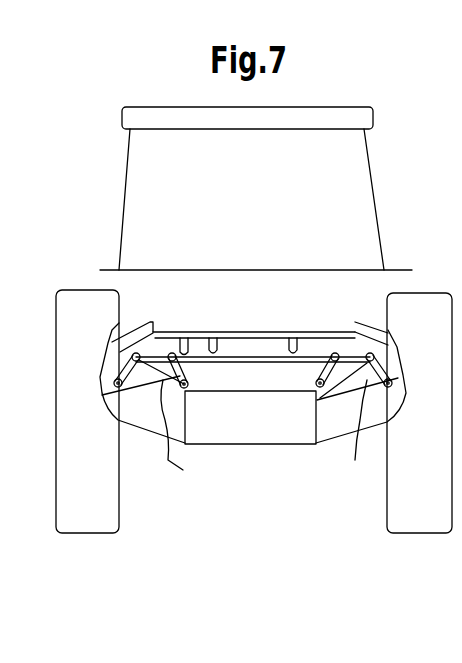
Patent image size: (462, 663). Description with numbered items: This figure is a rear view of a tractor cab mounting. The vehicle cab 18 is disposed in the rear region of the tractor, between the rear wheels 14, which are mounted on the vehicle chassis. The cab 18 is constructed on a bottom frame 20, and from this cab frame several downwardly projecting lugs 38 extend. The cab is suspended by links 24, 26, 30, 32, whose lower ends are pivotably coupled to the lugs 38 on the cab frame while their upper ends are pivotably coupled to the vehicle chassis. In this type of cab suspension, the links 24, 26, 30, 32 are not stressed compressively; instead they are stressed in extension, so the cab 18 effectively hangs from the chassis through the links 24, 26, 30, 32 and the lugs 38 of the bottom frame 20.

The rear wheels 14 is at (90, 517).
The vehicle cab 18 is at (365, 191).
The bottom frame 20 is at (180, 332).
The link 24 is at (135, 380).
The link 26 is at (177, 442).
The link 30 is at (354, 434).
The link 32 is at (330, 380).
The downwardly projecting lugs 38 is at (127, 340).